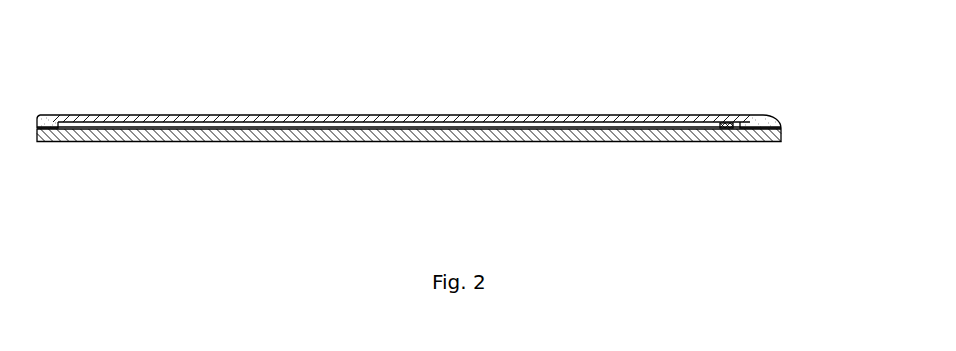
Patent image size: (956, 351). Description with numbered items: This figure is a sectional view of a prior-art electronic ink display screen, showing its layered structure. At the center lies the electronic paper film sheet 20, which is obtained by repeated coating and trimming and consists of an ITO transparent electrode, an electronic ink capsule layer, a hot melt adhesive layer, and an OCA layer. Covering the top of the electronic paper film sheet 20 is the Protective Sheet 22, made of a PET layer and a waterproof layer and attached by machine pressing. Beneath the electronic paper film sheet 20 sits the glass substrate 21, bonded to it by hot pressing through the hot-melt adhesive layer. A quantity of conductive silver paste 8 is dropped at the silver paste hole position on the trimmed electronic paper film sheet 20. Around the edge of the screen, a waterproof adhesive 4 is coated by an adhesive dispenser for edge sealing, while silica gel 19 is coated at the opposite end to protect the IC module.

The waterproof adhesive 4 is at (48, 120).
The conductive silver paste 8 is at (727, 128).
The silica gel 19 is at (758, 120).
The electronic paper film sheet 20 is at (493, 127).
The glass substrate 21 is at (490, 140).
The Protective Sheet (PS) 22 is at (315, 117).